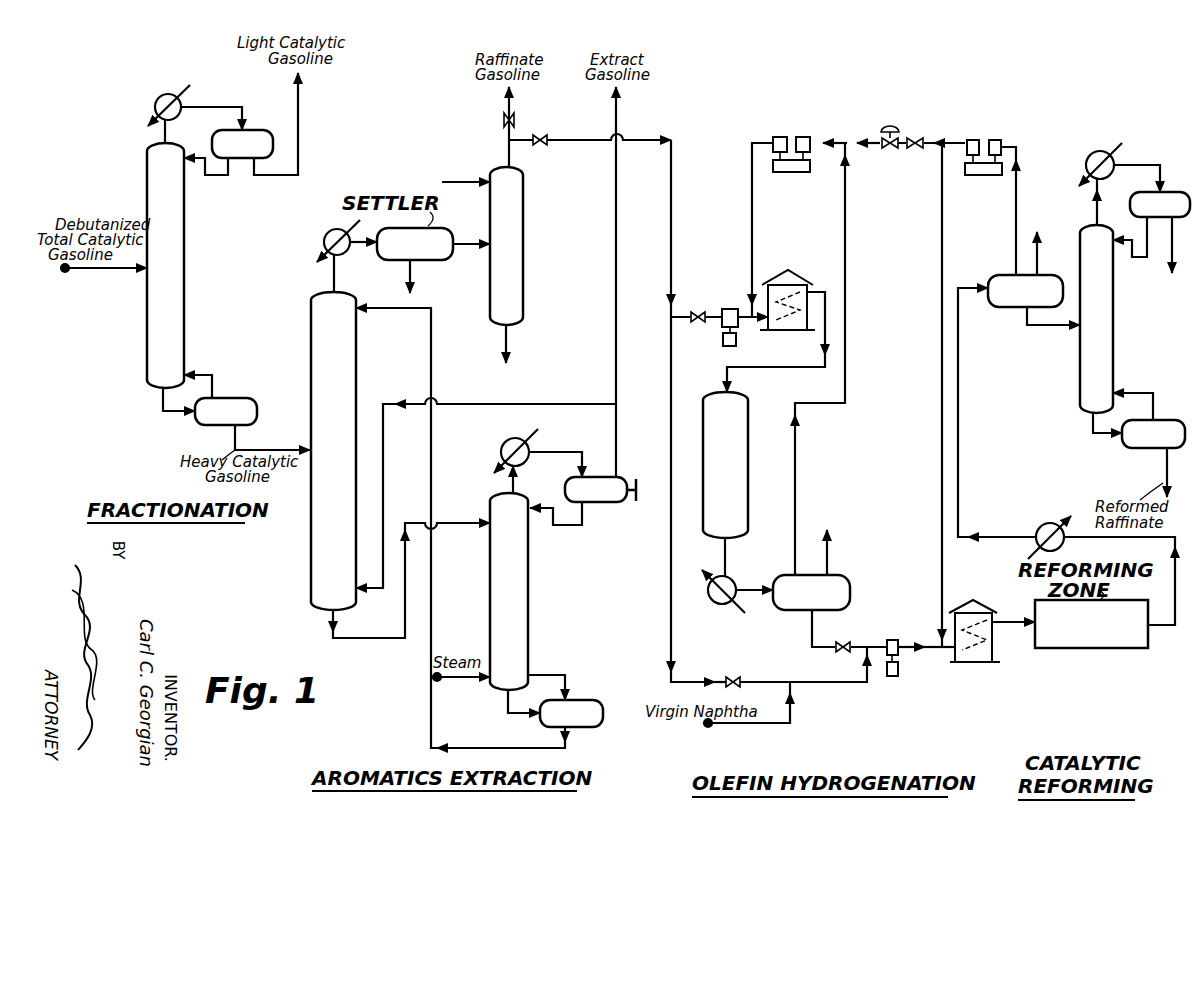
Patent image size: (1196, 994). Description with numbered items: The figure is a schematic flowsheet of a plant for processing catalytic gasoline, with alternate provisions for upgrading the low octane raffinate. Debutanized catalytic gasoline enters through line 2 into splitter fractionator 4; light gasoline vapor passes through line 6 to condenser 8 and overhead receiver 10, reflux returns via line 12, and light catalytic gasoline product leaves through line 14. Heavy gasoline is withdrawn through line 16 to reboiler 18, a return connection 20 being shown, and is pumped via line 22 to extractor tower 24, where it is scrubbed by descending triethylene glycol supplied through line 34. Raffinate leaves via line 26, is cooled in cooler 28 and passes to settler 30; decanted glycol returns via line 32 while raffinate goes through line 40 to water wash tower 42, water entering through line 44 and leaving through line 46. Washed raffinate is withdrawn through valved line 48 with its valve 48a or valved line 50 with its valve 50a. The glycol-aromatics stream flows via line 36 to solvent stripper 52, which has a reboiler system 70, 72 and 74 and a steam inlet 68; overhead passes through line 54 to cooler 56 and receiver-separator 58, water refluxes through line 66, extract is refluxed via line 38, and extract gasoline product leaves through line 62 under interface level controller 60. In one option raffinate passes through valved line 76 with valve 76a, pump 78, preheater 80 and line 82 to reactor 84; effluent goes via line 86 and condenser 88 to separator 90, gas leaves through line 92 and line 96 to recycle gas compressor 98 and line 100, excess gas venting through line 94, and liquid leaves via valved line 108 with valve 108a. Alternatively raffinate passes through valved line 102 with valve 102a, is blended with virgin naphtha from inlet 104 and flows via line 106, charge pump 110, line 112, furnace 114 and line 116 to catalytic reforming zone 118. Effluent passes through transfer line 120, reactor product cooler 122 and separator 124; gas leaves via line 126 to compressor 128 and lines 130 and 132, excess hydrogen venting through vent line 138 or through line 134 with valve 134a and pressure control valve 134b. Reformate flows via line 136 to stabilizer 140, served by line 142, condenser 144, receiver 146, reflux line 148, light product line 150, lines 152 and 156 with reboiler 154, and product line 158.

The line 2 is at (78, 269).
The splitter fractionator 4 is at (171, 193).
The line 6 is at (170, 130).
The condenser 8 is at (157, 100).
The overhead receiver 10 is at (252, 153).
The line 12 is at (213, 176).
The line 14 is at (299, 122).
The line 16 is at (163, 406).
The reboiler 18 is at (236, 421).
The return line 20 is at (215, 386).
The line 22 is at (270, 450).
The extractor tower 24 is at (343, 333).
The line 26 is at (338, 268).
The cooler 28 is at (324, 238).
The settler 30 is at (425, 253).
The line 32 is at (413, 274).
The line 34 is at (400, 309).
The line 36 is at (368, 638).
The line 38 is at (482, 403).
The line 40 is at (463, 242).
The water wash tower 42 is at (525, 232).
The line 44 is at (461, 181).
The line 46 is at (508, 341).
The valved line 48 is at (505, 143).
The valve 48a is at (504, 119).
The valved line 50 is at (590, 142).
The valve 50a is at (545, 135).
The solvent stripper 52 is at (530, 596).
The stripper overhead line 54 is at (519, 486).
The cooler 56 is at (502, 448).
The receiver-separator 58 is at (605, 499).
The interface level controller 60 is at (639, 491).
The line 62 is at (619, 223).
The line 66 is at (583, 517).
The steam line 68 is at (444, 680).
The reboiler system 70 is at (522, 710).
The reboiler system 72 is at (581, 723).
The reboiler system 74 is at (570, 692).
The valved line 76 is at (714, 313).
The valve 76a is at (698, 325).
The pump 78 is at (737, 341).
The preheater 80 is at (794, 280).
The line 82 is at (824, 351).
The reactor 84 is at (749, 452).
The line 86 is at (727, 568).
The condenser 88 is at (709, 594).
The separator 90 is at (822, 601).
The line 92 is at (848, 264).
The vent line 94 is at (830, 561).
The line 96 is at (834, 140).
The recycle gas compressor 98 is at (789, 173).
The line 100 is at (750, 220).
The valved line 102 is at (671, 393).
The valved line 102a is at (737, 678).
The virgin naphtha line 104 is at (750, 724).
The line 106 is at (820, 684).
The valved line 108 is at (811, 629).
The valve 108a is at (847, 641).
The charge pump 110 is at (893, 677).
The line 112 is at (940, 650).
The furnace 114 is at (966, 600).
The line 116 is at (1005, 625).
The catalytic reforming zone 118 is at (1106, 632).
The transfer line 120 is at (961, 446).
The reactor product cooler 122 is at (1040, 523).
The separator 124 is at (1042, 300).
The line 126 is at (1014, 245).
The compressor 128 is at (975, 177).
The line 130 is at (949, 143).
The line 132 is at (940, 217).
The valved line 134 is at (866, 148).
The valve 134a is at (916, 150).
The pressure control valve 134b is at (893, 132).
The line 136 is at (1029, 327).
The vent line 138 is at (1039, 264).
The stabilizer 140 is at (1115, 332).
The line 142 is at (1103, 197).
The condenser 144 is at (1090, 152).
The receiver 146 is at (1175, 214).
The reflux line 148 is at (1145, 229).
The light product line 150 is at (1170, 258).
The line 152 is at (1090, 427).
The reboiler 154 is at (1168, 443).
The line 156 is at (1148, 392).
The line 158 is at (1165, 471).